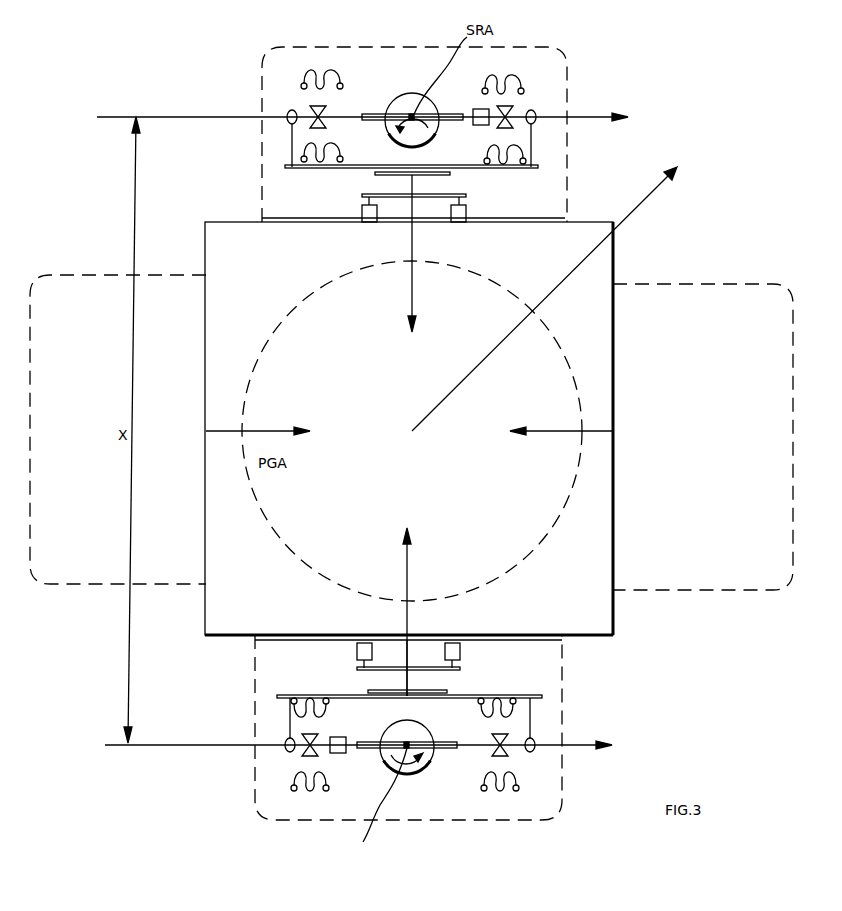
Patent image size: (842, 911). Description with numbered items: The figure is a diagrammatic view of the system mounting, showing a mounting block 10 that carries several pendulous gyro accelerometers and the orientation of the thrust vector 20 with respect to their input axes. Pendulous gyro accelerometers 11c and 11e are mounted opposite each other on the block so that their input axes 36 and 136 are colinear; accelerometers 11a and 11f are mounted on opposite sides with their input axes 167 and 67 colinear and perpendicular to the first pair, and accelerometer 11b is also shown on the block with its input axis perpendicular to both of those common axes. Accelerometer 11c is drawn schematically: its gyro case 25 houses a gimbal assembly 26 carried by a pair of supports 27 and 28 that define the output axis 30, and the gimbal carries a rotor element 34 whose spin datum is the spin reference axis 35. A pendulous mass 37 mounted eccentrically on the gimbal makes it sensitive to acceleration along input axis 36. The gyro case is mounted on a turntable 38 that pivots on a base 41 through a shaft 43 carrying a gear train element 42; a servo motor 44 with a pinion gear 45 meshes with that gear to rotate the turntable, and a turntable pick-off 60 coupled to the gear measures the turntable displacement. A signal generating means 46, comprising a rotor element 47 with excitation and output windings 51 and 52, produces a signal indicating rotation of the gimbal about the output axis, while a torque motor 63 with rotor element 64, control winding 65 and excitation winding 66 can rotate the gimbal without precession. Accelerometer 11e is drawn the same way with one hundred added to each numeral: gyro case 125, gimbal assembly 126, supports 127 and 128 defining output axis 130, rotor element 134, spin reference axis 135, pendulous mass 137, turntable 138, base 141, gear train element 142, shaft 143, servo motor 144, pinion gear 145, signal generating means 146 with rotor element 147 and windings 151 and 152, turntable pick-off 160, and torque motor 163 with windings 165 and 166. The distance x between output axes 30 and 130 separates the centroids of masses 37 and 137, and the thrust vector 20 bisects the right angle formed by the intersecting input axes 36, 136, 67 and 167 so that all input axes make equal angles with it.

The mounting block 10 is at (238, 222).
The pendulous gyro accelerometer 11a is at (738, 284).
The pendulous gyro accelerometer 11b is at (291, 575).
The pendulous gyro accelerometer 11c is at (540, 47).
The pendulous gyro accelerometer 11e is at (505, 820).
The pendulous gyro accelerometer 11f is at (80, 585).
The thrust vector 20 is at (627, 215).
The gyro case 25 is at (530, 170).
The gimbal assembly 26 is at (386, 118).
The support 27 is at (291, 156).
The support 28 is at (532, 156).
The output axis 30 is at (578, 117).
The rotor element 34 is at (430, 142).
The spin reference axis 35 is at (506, 48).
The gyro input axis 36 is at (412, 300).
The pendulous mass 37 is at (484, 126).
The turntable 38 is at (372, 176).
The base 41 is at (525, 218).
The gear train element 42 is at (398, 194).
The shaft 43 is at (420, 182).
The servo motor 44 is at (377, 214).
The pinion gear 45 is at (362, 196).
The signal generating means 46 is at (340, 138).
The rotor element 47 is at (310, 110).
The excitation winding 51 is at (340, 151).
The output winding 52 is at (318, 72).
The turntable pick-off 60 is at (466, 211).
The torque motor 63 is at (447, 99).
The rotor element 64 is at (512, 116).
The control winding 65 is at (506, 78).
The excitation winding 66 is at (507, 146).
The input axis 67 is at (272, 430).
The gyro case 125 is at (305, 695).
The gimbal assembly 126 is at (430, 752).
The support 127 is at (542, 725).
The support 128 is at (290, 713).
The output axis 130 is at (566, 745).
The rotor element 134 is at (412, 722).
The spin reference axis 135 is at (385, 809).
The input axis 136 is at (407, 575).
The pendulous mass 137 is at (348, 736).
The turntable 138 is at (368, 692).
The base 141 is at (516, 644).
The gear train element 142 is at (428, 672).
The shaft 143 is at (404, 680).
The servo motor 144 is at (445, 645).
The pinion gear 145 is at (460, 669).
The signal generating means 146 is at (456, 741).
The rotor element 147 is at (496, 735).
The excitation winding 151 is at (511, 718).
The output winding 152 is at (485, 789).
The turntable pick-off 160 is at (372, 652).
The torque motor 163 is at (336, 777).
The control winding 165 is at (320, 710).
The excitation winding 166 is at (312, 792).
The input axis 167 is at (538, 430).